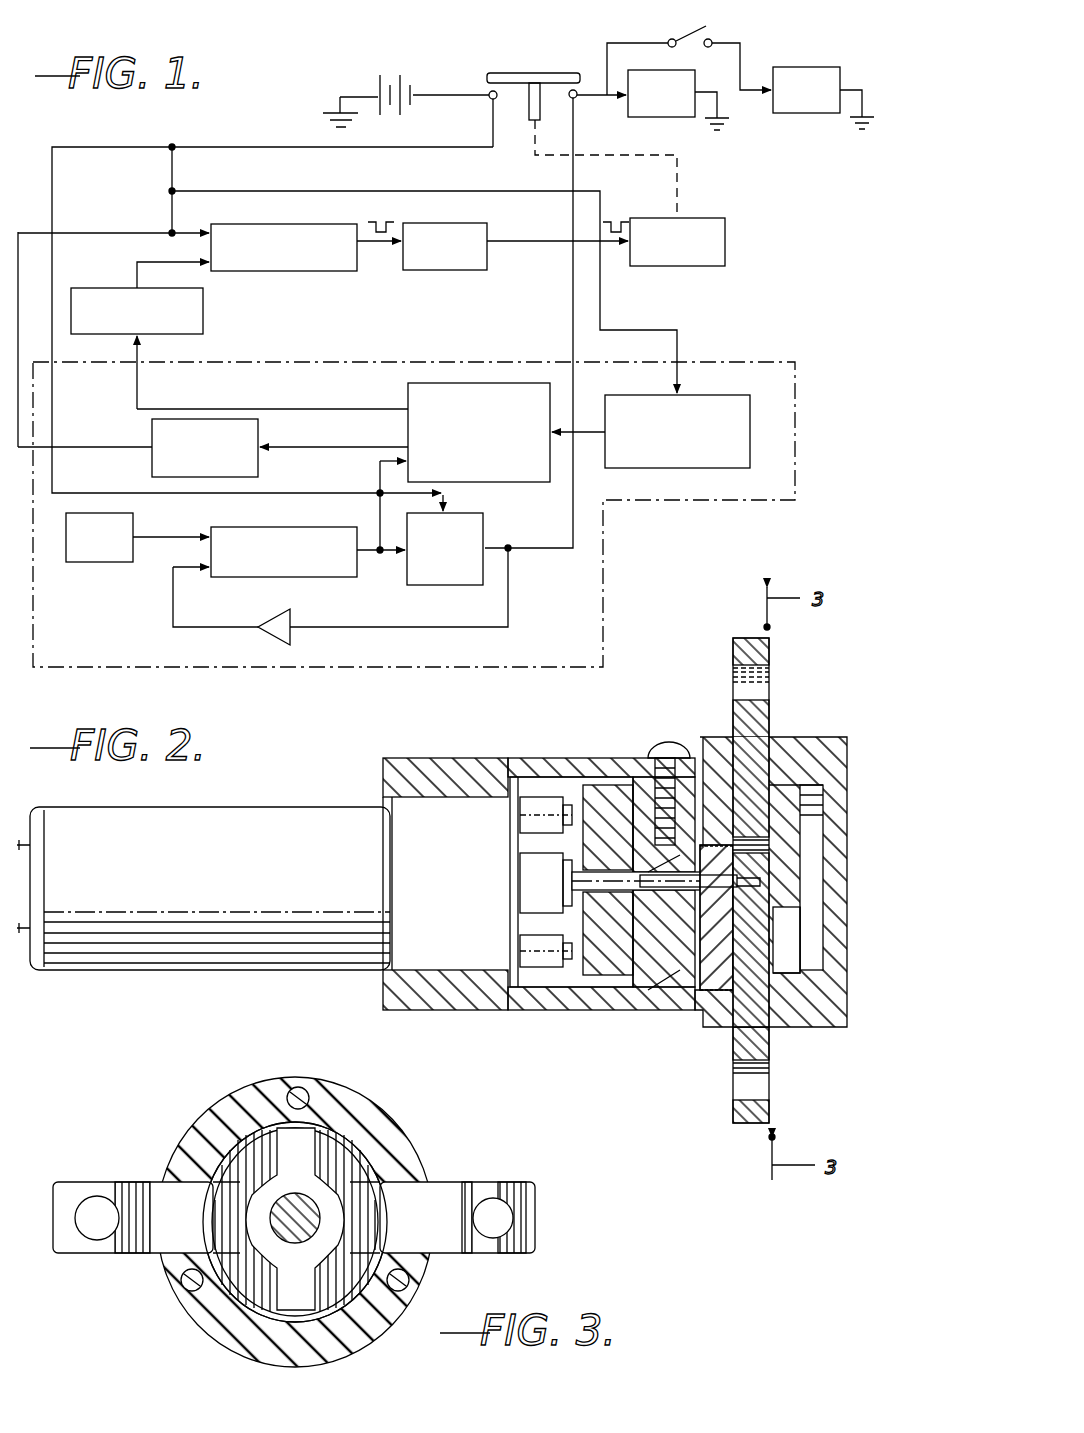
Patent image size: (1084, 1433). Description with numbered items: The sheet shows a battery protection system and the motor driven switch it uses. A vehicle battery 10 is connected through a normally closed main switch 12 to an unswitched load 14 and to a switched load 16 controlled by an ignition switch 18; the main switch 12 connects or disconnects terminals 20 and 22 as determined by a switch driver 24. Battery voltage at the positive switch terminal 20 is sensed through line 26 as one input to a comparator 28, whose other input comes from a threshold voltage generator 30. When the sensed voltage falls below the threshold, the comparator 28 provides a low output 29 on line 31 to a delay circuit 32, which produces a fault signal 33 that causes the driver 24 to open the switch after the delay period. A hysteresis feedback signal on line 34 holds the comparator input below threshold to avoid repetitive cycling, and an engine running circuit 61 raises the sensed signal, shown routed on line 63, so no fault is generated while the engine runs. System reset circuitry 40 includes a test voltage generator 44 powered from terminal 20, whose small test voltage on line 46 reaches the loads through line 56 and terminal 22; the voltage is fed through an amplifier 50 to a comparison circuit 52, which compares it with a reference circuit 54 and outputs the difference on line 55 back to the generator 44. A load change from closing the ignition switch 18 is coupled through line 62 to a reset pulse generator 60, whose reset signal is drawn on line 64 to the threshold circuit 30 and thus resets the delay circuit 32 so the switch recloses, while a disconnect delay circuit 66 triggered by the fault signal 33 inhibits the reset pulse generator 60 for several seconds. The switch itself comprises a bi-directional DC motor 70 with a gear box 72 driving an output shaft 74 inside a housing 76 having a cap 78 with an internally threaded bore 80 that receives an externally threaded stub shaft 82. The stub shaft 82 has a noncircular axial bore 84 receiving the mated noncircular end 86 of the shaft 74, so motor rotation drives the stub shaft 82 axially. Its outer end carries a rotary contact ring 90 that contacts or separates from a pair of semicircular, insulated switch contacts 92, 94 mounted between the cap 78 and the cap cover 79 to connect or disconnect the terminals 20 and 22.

In FIG. 1, the vehicle battery 10 is at (393, 72).
In FIG. 1, the main switch 12 is at (520, 70).
In FIG. 1, the unswitched load 14 is at (650, 118).
In FIG. 1, the switched load 16 is at (790, 113).
In FIG. 1, the ignition switch 18 is at (680, 40).
In FIG. 1, the positive switch terminal 20 is at (488, 100).
In FIG. 2, the positive switch terminal 20 is at (762, 693).
In FIG. 3, the positive switch terminal 20 is at (97, 1200).
In FIG. 1, the switch terminal 22 is at (579, 99).
In FIG. 2, the switch terminal 22 is at (765, 1088).
In FIG. 3, the switch terminal 22 is at (490, 1200).
In FIG. 1, the switch driver 24 is at (688, 218).
In FIG. 1, the line 26 is at (254, 145).
In FIG. 1, the comparator 28 is at (278, 222).
In FIG. 1, the comparator output 29 is at (368, 222).
In FIG. 1, the threshold voltage generator 30 is at (105, 288).
In FIG. 1, the line 31 is at (368, 246).
In FIG. 1, the delay circuit 32 is at (451, 222).
In FIG. 1, the fault signal 33 is at (610, 222).
In FIG. 1, the hysteresis feedback line 34 is at (352, 188).
In FIG. 1, the system reset circuitry 40 is at (603, 575).
In FIG. 1, the test voltage generator 44 is at (490, 518).
In FIG. 1, the line 46 is at (508, 550).
In FIG. 1, the amplifier 50 is at (272, 620).
In FIG. 1, the comparison circuit 52 is at (281, 526).
In FIG. 1, the reference circuit 54 is at (100, 562).
In FIG. 1, the line 55 is at (365, 556).
In FIG. 1, the line 56 is at (573, 505).
In FIG. 1, the reset pulse generator 60 is at (408, 392).
In FIG. 1, the engine running circuit 61 is at (258, 462).
In FIG. 1, the line 62 is at (380, 461).
In FIG. 1, the engine running signal line 63 is at (75, 447).
In FIG. 1, the reset line to threshold 64 is at (278, 406).
In FIG. 1, the disconnect delay circuit 66 is at (648, 468).
In FIG. 2, the bi-directional DC motor 70 is at (247, 807).
In FIG. 2, the gear box 72 is at (430, 735).
In FIG. 2, the output shaft 74 is at (588, 898).
In FIG. 2, the housing 76 is at (522, 758).
In FIG. 2, the cap 78 is at (712, 737).
In FIG. 2, the cap cover 79 is at (838, 737).
In FIG. 3, the cap cover 79 is at (248, 1090).
In FIG. 2, the internally threaded bore 80 is at (722, 925).
In FIG. 2, the stub shaft 82 is at (692, 850).
In FIG. 3, the stub shaft 82 is at (325, 1215).
In FIG. 2, the noncircular axial bore 84 is at (708, 885).
In FIG. 2, the noncircular end 86 is at (690, 918).
In FIG. 2, the rotary contact ring 90 is at (790, 826).
In FIG. 3, the rotary contact ring 90 is at (327, 1097).
In FIG. 2, the switch contact 92 is at (785, 785).
In FIG. 3, the switch contact 92 is at (217, 1128).
In FIG. 2, the switch contact 94 is at (775, 948).
In FIG. 3, the switch contact 94 is at (350, 1157).